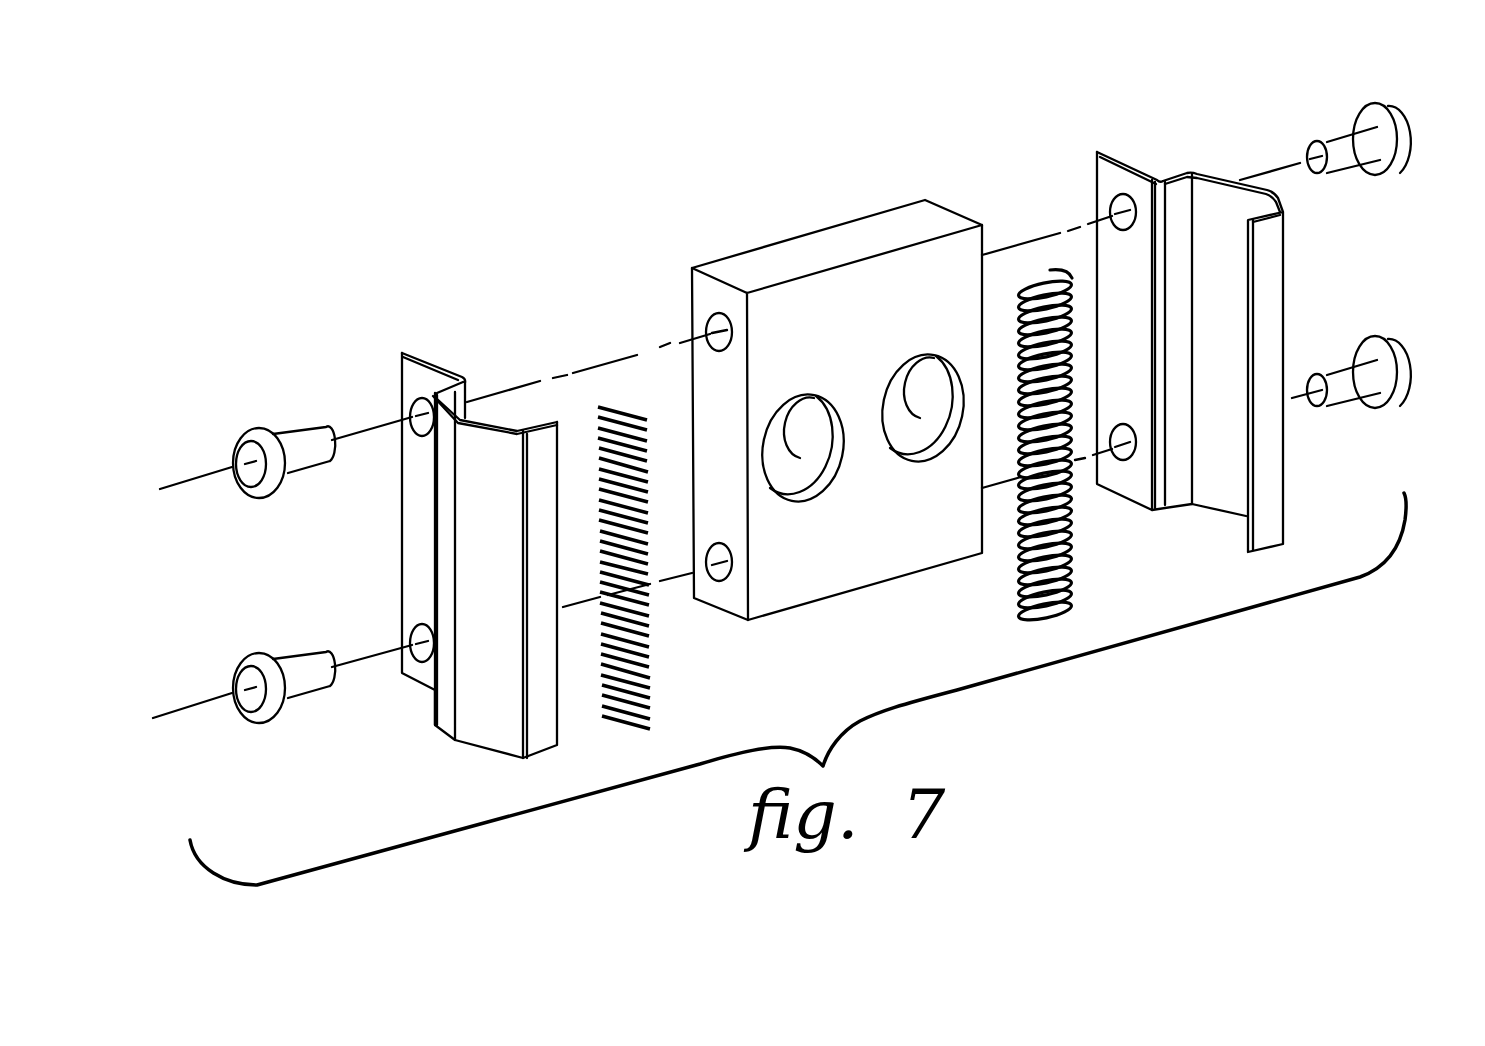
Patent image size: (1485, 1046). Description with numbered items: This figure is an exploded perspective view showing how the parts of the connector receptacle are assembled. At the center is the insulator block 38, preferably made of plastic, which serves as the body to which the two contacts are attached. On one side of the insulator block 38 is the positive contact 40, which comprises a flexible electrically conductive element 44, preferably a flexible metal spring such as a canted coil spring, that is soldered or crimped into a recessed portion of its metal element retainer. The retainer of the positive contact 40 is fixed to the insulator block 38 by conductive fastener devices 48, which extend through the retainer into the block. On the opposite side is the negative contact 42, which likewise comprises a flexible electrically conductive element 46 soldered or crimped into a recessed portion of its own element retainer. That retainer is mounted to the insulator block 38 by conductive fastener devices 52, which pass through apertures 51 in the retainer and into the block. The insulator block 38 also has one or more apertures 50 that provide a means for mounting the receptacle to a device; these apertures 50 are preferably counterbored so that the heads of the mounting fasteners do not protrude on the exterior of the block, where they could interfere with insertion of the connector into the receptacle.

The insulator block 38 is at (834, 363).
The positive contact 40 is at (1207, 172).
The negative contact 42 is at (436, 477).
The flexible electrically conductive element 44 is at (1044, 319).
The flexible electrically conductive element 46 is at (618, 427).
The conductive fastener devices 48 is at (1337, 367).
The apertures 50 is at (925, 368).
The apertures 51 is at (400, 402).
The conductive fastener devices 52 is at (293, 660).